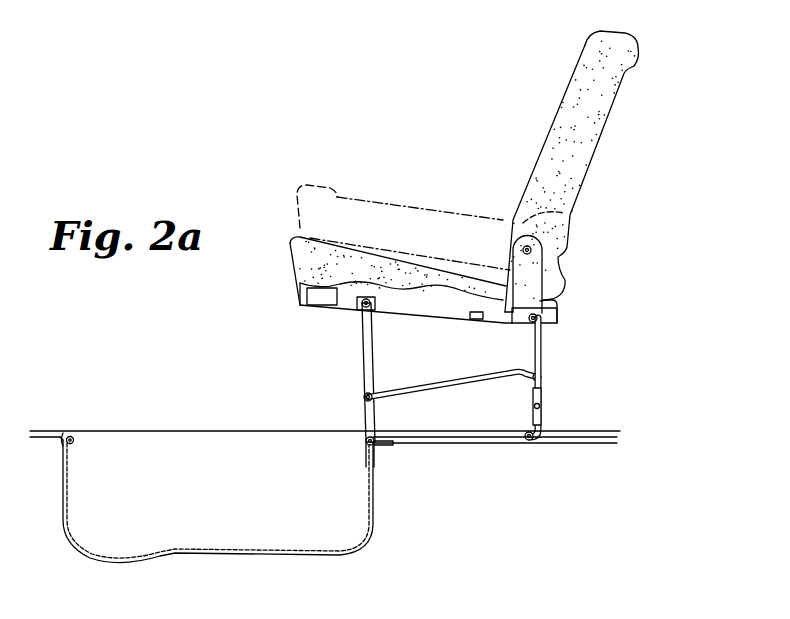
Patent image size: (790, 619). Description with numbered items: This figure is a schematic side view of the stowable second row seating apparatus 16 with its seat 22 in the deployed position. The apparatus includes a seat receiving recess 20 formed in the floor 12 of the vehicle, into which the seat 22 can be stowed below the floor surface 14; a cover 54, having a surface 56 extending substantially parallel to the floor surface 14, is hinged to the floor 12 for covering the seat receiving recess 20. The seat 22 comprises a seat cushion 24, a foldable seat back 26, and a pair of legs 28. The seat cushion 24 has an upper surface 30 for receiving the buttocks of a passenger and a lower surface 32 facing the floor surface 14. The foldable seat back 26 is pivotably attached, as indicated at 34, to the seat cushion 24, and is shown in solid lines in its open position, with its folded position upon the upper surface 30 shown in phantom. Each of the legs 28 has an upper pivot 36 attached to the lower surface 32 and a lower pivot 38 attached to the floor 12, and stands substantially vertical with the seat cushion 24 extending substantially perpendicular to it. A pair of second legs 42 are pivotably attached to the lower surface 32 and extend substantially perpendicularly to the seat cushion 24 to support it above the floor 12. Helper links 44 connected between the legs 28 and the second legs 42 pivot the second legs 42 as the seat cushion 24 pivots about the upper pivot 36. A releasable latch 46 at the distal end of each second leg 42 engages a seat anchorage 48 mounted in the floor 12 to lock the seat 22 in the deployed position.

The floor 12 is at (393, 432).
The floor surface 14 is at (598, 430).
The second row seating apparatus 16 is at (420, 125).
The seat receiving recess 20 is at (233, 520).
The seat 22 is at (283, 172).
The seat cushion 24 is at (300, 265).
The foldable seat back 26 is at (572, 177).
The legs 28 is at (362, 355).
The upper surface 30 is at (408, 257).
The lower surface 32 is at (407, 316).
The pivotable attachment 34 is at (532, 250).
The upper pivot 36 is at (362, 308).
The lower pivot 38 is at (367, 437).
The second legs 42 is at (542, 343).
The helper links 44 is at (447, 383).
The releasable latch 46 is at (542, 415).
The seat anchorage 48 is at (530, 430).
The cover 54 is at (173, 437).
The surface 56 is at (116, 426).